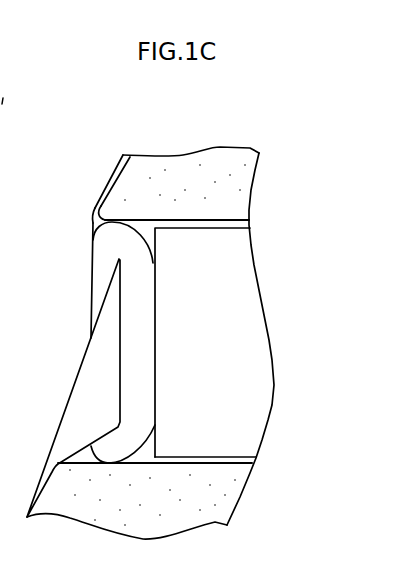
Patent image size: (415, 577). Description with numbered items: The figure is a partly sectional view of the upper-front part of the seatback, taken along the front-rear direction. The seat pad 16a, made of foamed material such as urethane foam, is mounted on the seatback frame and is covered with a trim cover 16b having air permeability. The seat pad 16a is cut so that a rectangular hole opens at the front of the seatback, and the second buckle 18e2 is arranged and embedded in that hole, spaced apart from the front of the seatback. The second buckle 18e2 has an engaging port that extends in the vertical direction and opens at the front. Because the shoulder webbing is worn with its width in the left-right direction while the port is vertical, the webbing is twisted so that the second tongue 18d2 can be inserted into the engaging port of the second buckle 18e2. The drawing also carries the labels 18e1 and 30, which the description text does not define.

The seat pad 16a is at (188, 163).
The trim cover 16b is at (113, 173).
The rounded corner portion 18e1 is at (97, 197).
The second tongue 18d2 is at (95, 272).
The second buckle 18e2 is at (249, 339).
The outer member 30 is at (238, 287).